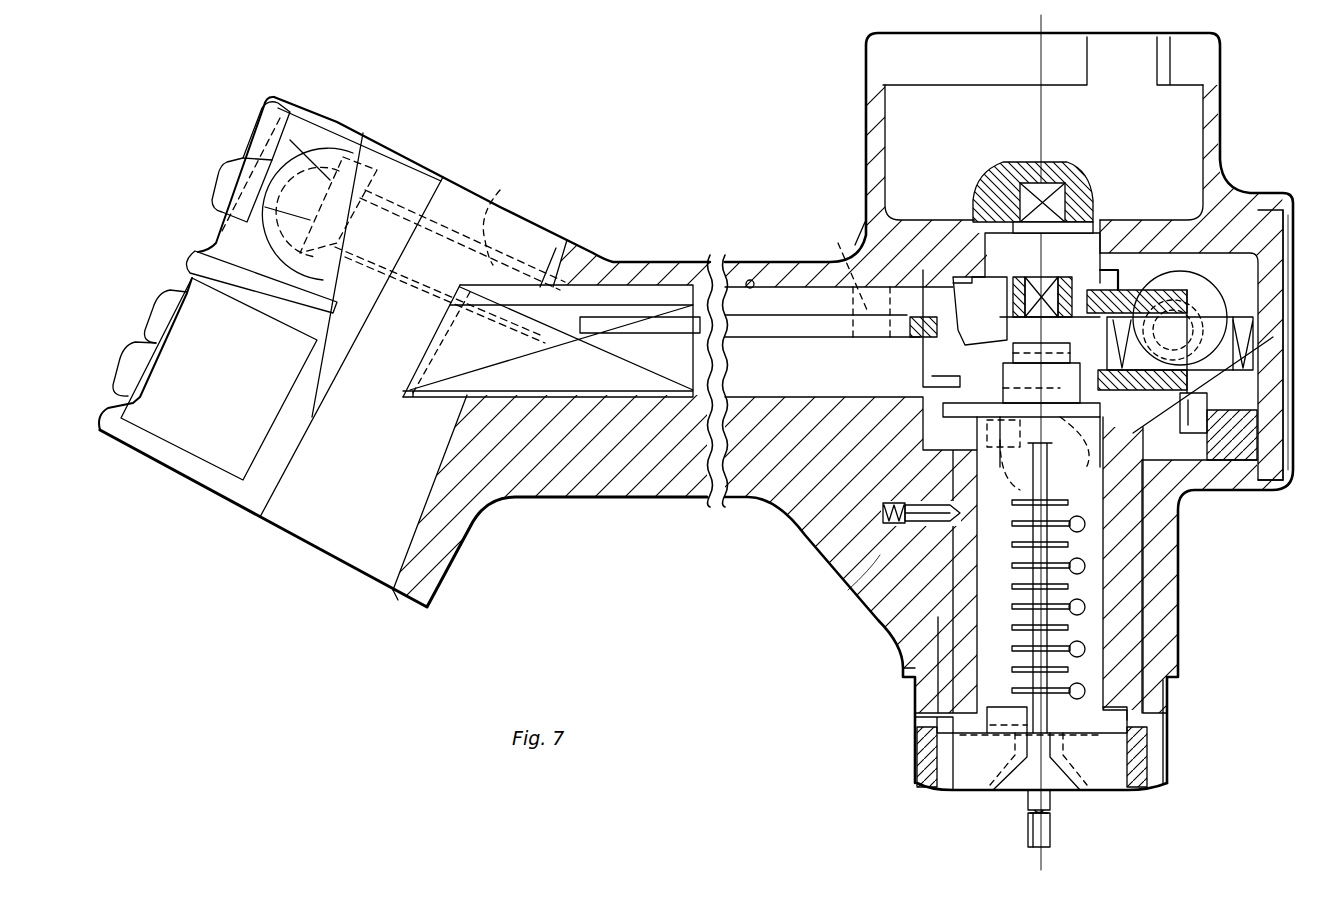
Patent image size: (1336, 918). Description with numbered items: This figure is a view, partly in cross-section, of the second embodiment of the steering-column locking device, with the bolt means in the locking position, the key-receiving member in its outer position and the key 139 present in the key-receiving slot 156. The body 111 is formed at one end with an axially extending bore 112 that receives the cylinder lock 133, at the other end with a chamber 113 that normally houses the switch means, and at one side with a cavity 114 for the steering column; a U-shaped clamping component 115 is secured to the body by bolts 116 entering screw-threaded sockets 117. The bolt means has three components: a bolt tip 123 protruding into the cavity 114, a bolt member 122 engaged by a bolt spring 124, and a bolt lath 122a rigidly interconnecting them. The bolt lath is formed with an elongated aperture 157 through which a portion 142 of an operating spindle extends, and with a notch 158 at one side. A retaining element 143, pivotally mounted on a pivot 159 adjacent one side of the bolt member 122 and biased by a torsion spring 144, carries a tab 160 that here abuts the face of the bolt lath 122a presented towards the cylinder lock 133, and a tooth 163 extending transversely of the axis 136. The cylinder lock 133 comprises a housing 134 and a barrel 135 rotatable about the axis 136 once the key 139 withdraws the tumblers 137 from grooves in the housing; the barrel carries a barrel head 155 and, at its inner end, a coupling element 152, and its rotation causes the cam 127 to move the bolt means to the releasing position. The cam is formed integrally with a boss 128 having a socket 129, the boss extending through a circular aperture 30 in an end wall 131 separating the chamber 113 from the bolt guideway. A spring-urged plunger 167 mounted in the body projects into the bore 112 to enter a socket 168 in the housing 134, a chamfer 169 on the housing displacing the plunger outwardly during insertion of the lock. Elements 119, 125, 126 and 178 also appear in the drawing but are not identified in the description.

The body 111 is at (820, 574).
The axially extending bore 112 is at (912, 672).
The chamber 113 is at (890, 162).
The cavity 114 is at (400, 548).
The clamping component 115 is at (203, 487).
The bolts 116 is at (245, 158).
The screw-threaded sockets 117 is at (511, 219).
The passage 119 is at (757, 281).
The bolt member 122 is at (1127, 325).
The bolt lath 122a is at (767, 333).
The bolt tip 123 is at (447, 397).
The bolt spring 124 is at (1247, 336).
The cover 125 is at (1286, 420).
The bearing 126 is at (1175, 305).
The cam 127 is at (947, 313).
The boss 128 is at (1010, 205).
The socket 129 is at (1052, 265).
The circular aperture 30 is at (1097, 252).
The end wall 131 is at (1170, 245).
The cylinder lock 133 is at (1113, 797).
The housing 134 is at (1128, 548).
The barrel 135 is at (1090, 593).
The axis 136 is at (1048, 862).
The tumblers 137 is at (1012, 652).
The key 139 is at (1027, 826).
The portion of operating spindle 142 is at (958, 300).
The retaining element 143 is at (1164, 418).
The torsion spring 144 is at (1285, 478).
The coupling element 152 is at (945, 410).
The barrel head 155 is at (918, 790).
The key-receiving slot 156 is at (920, 738).
The elongated aperture 157 is at (866, 225).
The notch 158 is at (832, 267).
The pivot 159 is at (1286, 388).
The tab 160 is at (940, 355).
The tooth 163 is at (1010, 456).
The plunger 167 is at (848, 592).
The socket 168 is at (1082, 456).
The chamfer 169 is at (953, 440).
The break line 178 is at (728, 499).